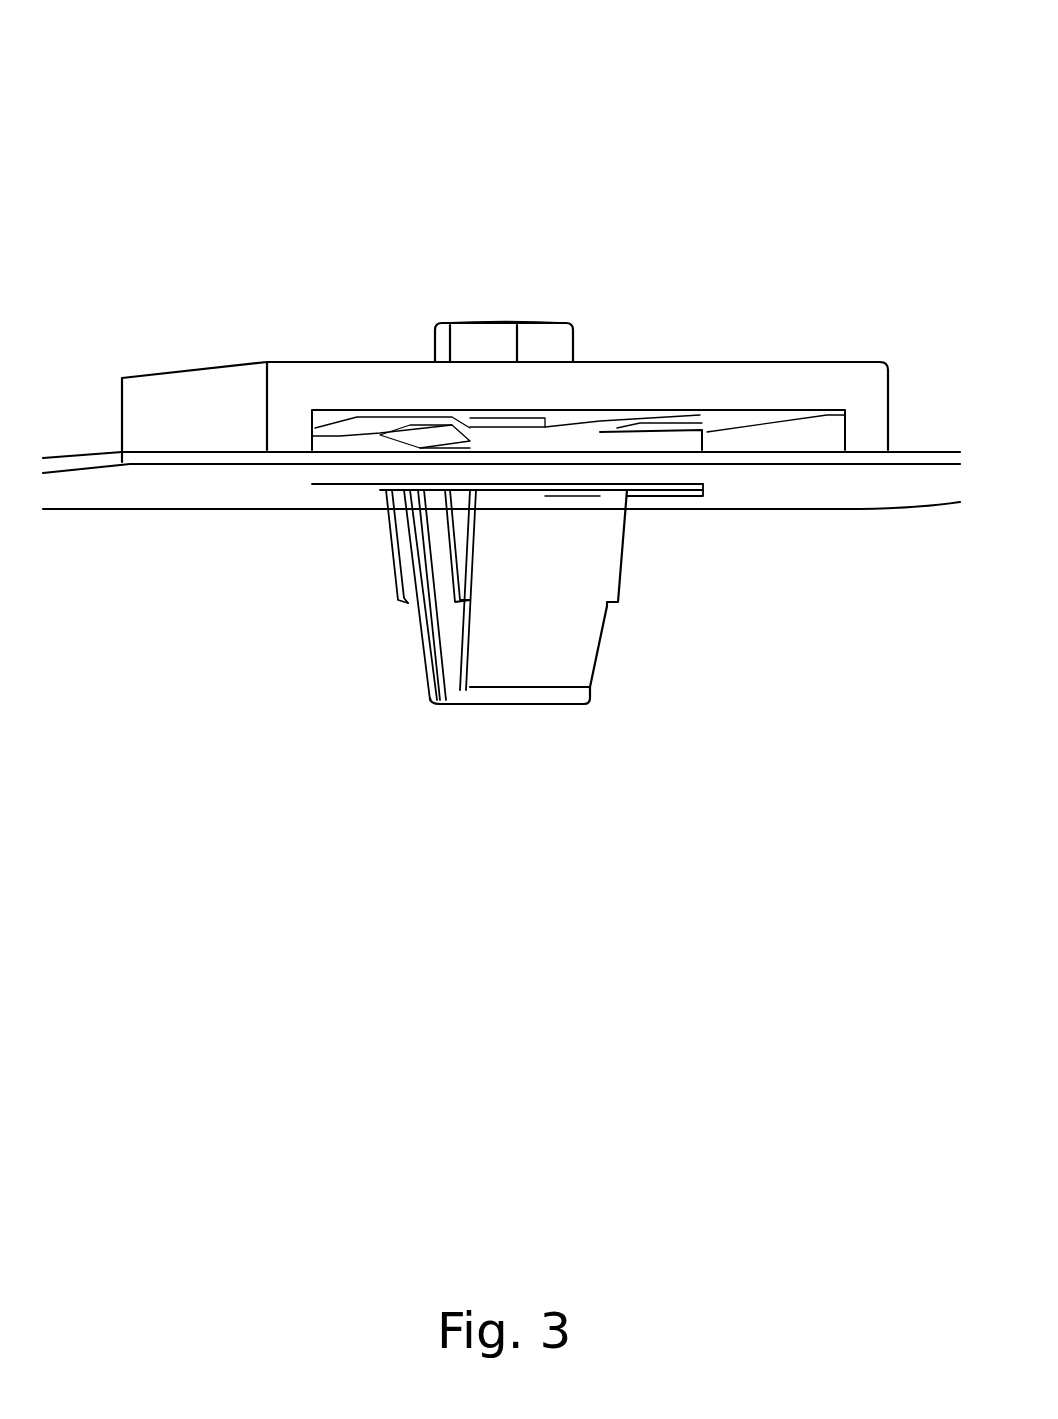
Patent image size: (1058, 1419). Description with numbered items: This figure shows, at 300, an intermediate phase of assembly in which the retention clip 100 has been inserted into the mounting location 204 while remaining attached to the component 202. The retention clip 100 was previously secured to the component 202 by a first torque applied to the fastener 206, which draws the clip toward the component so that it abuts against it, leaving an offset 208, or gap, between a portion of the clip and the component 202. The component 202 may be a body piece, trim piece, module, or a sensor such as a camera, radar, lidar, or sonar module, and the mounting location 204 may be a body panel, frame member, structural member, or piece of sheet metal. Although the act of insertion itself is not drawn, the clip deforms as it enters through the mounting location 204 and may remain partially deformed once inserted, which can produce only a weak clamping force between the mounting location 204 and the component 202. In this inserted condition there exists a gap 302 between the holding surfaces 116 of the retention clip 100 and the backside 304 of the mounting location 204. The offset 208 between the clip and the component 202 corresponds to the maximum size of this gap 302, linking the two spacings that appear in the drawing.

The inserted stage 300 is at (831, 56).
The retention clip 100 is at (517, 580).
The holding surfaces 116 is at (545, 497).
The component 202 is at (700, 388).
The mounting location 204 is at (815, 492).
The fastener 206 is at (505, 343).
The offset 208 is at (460, 428).
The gap 302 is at (517, 497).
The backside 304 is at (543, 474).